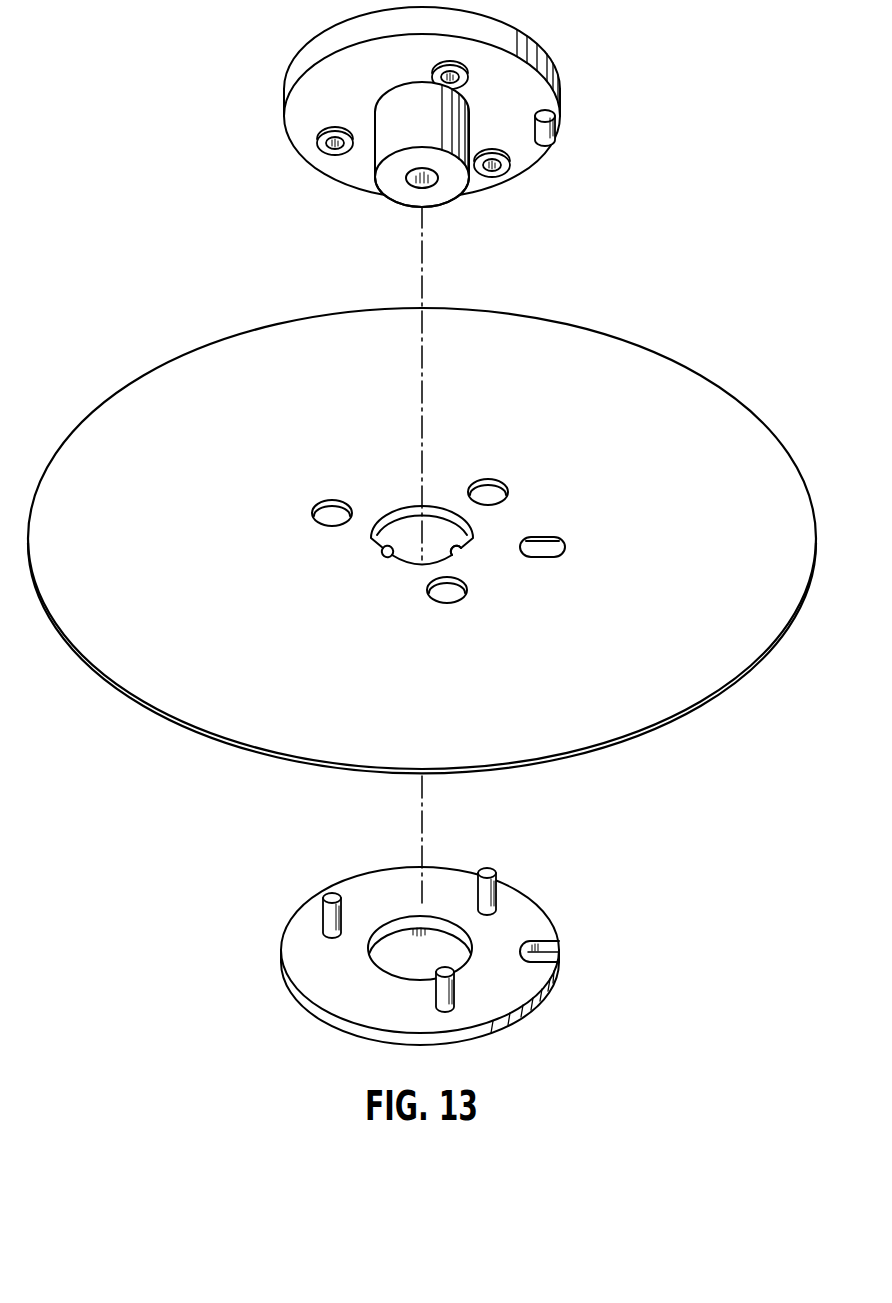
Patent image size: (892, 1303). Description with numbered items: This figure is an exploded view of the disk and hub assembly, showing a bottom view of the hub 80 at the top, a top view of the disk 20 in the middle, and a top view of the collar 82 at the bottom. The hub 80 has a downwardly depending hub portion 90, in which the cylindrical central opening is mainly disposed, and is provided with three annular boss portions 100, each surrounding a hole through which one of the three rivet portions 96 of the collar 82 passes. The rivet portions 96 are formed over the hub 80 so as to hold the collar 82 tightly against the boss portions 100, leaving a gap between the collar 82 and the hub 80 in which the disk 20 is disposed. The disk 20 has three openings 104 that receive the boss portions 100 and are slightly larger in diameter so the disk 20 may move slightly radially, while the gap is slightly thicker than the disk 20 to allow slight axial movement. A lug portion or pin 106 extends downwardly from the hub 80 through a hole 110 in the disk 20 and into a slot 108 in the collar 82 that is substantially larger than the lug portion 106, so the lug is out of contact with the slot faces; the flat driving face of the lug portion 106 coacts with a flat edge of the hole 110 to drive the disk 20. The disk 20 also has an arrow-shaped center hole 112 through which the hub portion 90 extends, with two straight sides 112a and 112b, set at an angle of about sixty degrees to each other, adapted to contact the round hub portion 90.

The hub 80 is at (394, 102).
The downwardly depending hub portion 90 is at (418, 127).
The annular boss portion 100 is at (335, 113).
The lug portion or pin 106 is at (535, 128).
The disk 20 is at (290, 680).
The center opening or hole 112 is at (422, 508).
The straight side 112a is at (388, 556).
The straight side 112b is at (462, 556).
The opening or hole 110 is at (576, 549).
The openings 104 is at (447, 621).
The collar 82 is at (395, 956).
The rivet portions 96 is at (408, 940).
The slot 108 is at (560, 946).